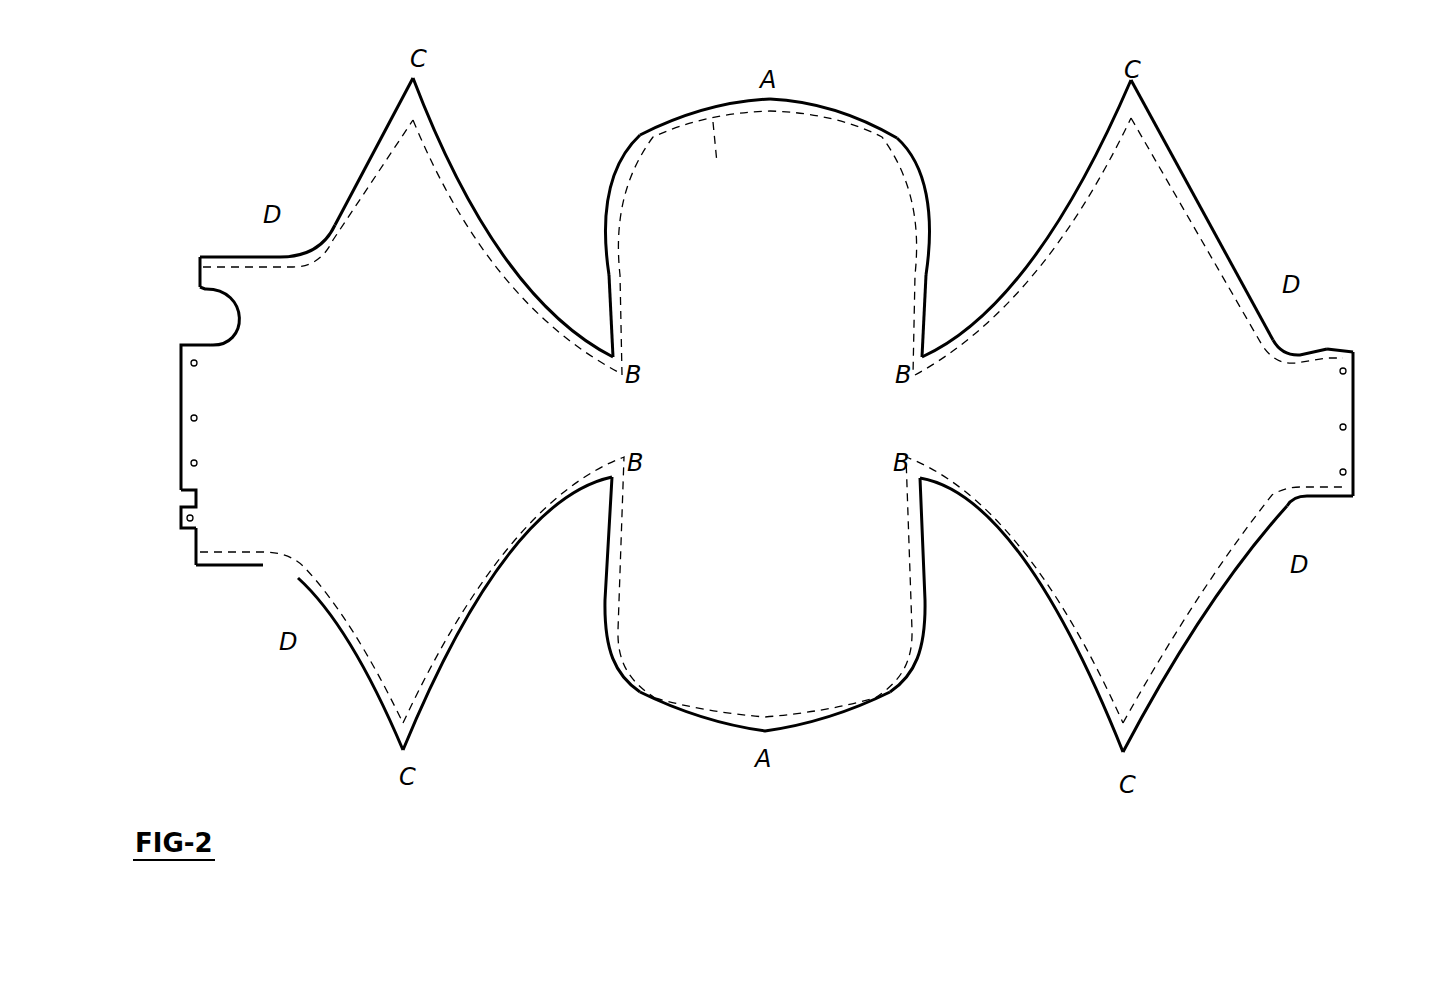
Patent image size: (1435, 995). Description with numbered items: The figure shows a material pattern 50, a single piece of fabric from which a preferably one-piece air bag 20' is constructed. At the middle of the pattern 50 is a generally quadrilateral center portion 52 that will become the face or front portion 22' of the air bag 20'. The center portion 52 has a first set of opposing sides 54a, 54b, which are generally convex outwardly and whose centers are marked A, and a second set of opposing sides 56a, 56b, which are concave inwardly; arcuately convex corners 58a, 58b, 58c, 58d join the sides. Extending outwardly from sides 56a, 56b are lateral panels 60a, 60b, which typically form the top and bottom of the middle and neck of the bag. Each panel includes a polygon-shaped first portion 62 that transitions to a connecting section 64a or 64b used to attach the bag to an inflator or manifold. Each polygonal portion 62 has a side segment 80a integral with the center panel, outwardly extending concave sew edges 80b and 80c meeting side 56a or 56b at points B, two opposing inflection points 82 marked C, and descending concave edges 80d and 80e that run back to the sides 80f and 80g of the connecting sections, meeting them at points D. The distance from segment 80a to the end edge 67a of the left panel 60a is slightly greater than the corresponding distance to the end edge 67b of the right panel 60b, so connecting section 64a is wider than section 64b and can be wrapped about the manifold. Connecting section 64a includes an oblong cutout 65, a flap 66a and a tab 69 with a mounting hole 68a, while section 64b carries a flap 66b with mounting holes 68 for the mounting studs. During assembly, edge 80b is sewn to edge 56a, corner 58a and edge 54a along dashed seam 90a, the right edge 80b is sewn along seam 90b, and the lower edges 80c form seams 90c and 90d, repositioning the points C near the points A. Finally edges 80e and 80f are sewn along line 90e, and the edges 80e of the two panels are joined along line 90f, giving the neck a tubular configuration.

The air bag 20' is at (605, 120).
The material pattern 50 is at (789, 39).
The front portion 22' is at (770, 298).
The center portion 52 is at (803, 147).
The side 54a is at (723, 107).
The side 54b is at (715, 727).
The side 56a is at (610, 268).
The side 56b is at (925, 260).
The corner 58a is at (620, 170).
The corner 58b is at (907, 157).
The corner 58c is at (898, 687).
The corner 58d is at (633, 683).
The lateral panel 60a is at (422, 451).
The lateral panel 60b is at (1167, 424).
The polygon-shaped first portion 62 is at (447, 250).
The connecting section 64a is at (217, 362).
The connecting section 64b is at (1273, 367).
The oblong cutout 65 is at (243, 325).
The flap 66a is at (178, 410).
The flap 66b is at (1343, 498).
The end edge 67a is at (180, 470).
The end edge 67b is at (1355, 428).
The mounting holes 68 is at (196, 421).
The mounting hole 68a is at (187, 519).
The tab 69 is at (213, 517).
The side segment 80a is at (637, 413).
The sew edge 80b is at (512, 266).
The sew edge 80c is at (983, 523).
The side 80d is at (1215, 570).
The side 80e is at (1195, 203).
The side 80f is at (1343, 350).
The side 80g is at (1313, 497).
The inflection point 82 is at (413, 132).
The sew seam 90a is at (720, 167).
The sew seam 90b is at (365, 185).
The sew seam 90c is at (523, 530).
The sew seam 90d is at (816, 703).
The sew line 90e is at (1150, 153).
The sew line 90f is at (327, 570).